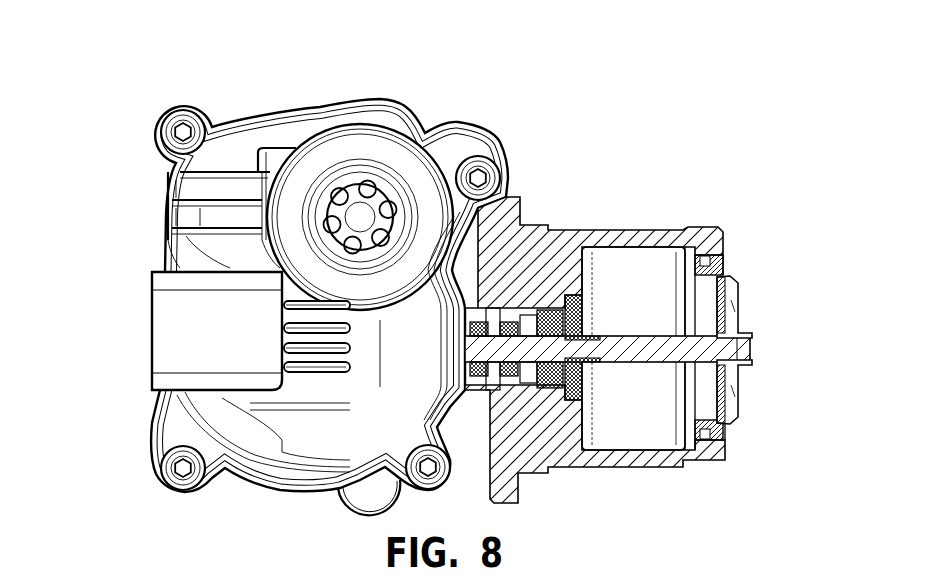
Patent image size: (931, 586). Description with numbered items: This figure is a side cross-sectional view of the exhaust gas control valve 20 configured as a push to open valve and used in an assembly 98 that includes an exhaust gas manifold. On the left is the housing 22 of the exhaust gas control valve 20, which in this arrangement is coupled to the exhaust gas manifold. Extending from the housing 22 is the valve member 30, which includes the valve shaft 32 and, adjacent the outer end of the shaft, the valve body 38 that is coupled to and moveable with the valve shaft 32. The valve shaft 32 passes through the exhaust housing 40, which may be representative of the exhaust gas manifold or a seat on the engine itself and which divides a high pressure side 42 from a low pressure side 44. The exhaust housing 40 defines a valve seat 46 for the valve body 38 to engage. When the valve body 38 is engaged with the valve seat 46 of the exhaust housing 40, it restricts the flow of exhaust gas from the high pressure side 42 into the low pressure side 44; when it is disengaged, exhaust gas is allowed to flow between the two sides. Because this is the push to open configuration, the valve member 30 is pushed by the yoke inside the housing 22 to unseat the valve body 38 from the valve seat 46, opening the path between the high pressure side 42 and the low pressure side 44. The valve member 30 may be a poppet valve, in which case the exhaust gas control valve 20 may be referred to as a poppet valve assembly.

The exhaust gas control valve 20 is at (110, 95).
The housing 22 is at (265, 112).
The assembly 98 is at (703, 138).
The valve shaft 32 is at (630, 336).
The exhaust housing 40 is at (700, 244).
The valve body 38 is at (740, 276).
The high pressure side 42 is at (754, 376).
The valve seat 46 is at (731, 428).
The valve member 30 is at (636, 392).
The low pressure side 44 is at (658, 392).